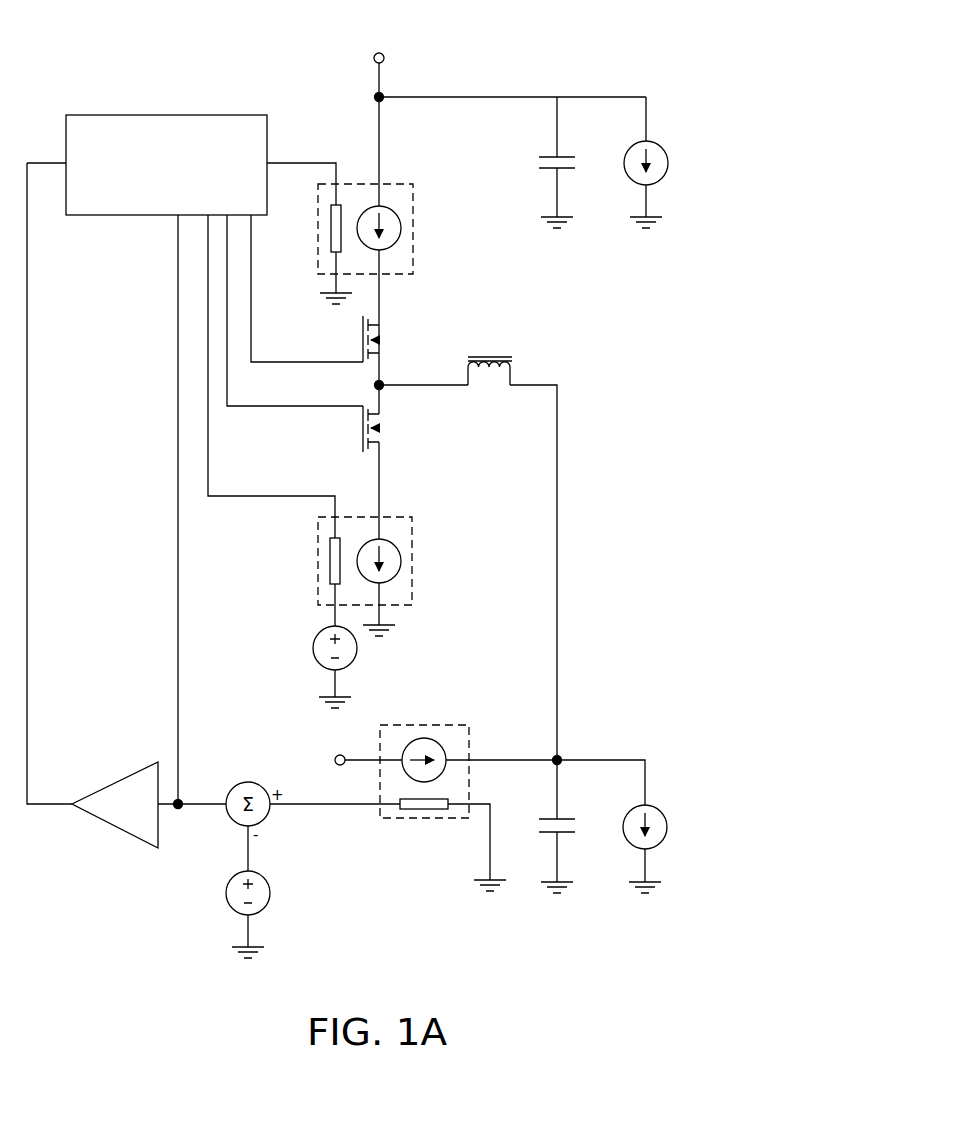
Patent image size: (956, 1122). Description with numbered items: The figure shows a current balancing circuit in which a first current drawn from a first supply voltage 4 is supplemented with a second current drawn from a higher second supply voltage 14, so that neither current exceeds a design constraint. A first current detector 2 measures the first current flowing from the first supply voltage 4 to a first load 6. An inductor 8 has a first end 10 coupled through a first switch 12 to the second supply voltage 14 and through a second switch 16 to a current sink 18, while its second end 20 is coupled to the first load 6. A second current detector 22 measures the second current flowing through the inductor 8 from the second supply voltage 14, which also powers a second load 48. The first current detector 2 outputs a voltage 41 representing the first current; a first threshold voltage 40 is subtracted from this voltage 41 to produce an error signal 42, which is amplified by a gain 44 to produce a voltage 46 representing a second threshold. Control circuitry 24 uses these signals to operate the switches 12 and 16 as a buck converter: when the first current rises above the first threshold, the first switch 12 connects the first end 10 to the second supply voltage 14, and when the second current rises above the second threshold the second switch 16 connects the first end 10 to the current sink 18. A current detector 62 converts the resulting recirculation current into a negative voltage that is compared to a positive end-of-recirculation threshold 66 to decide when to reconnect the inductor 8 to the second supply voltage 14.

The first current detector 2 is at (451, 725).
The first supply voltage 4 is at (360, 756).
The first load 6 is at (668, 808).
The inductor 8 is at (517, 355).
The first end 10 is at (440, 388).
The first switch 12 is at (387, 333).
The second supply voltage 14 is at (382, 77).
The second switch 16 is at (387, 429).
The current sink 18 is at (383, 617).
The second end 20 is at (557, 405).
The second current detector 22 is at (392, 184).
The control circuitry 24 is at (168, 114).
The first threshold voltage 40 is at (222, 906).
The voltage 41 is at (323, 806).
The error signal 42 is at (201, 804).
The gain 44 is at (106, 783).
The voltage 46 is at (27, 695).
The second load 48 is at (664, 143).
The current detector 62 is at (398, 517).
The end-of-recirculation threshold 66 is at (313, 665).